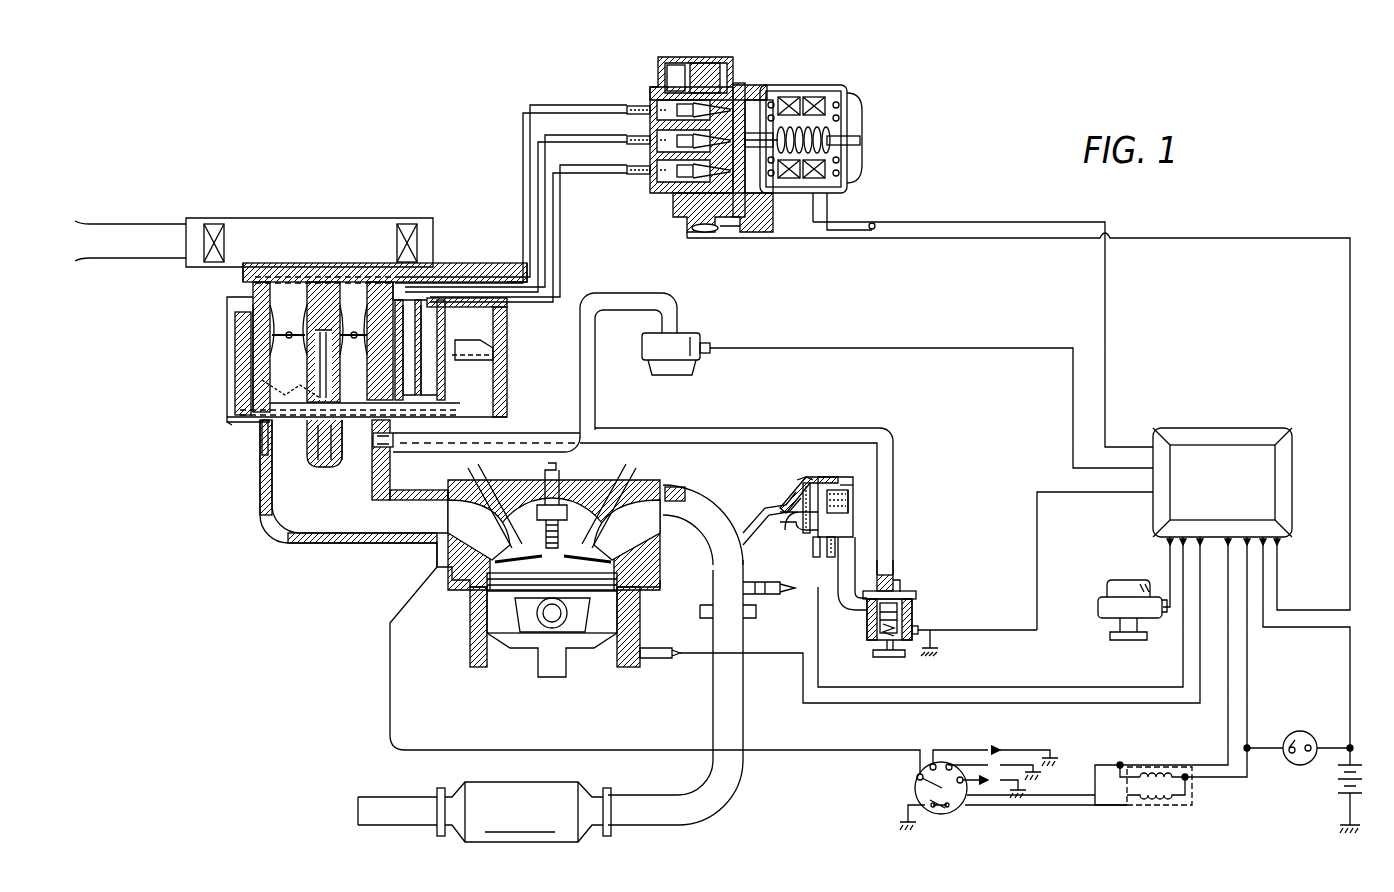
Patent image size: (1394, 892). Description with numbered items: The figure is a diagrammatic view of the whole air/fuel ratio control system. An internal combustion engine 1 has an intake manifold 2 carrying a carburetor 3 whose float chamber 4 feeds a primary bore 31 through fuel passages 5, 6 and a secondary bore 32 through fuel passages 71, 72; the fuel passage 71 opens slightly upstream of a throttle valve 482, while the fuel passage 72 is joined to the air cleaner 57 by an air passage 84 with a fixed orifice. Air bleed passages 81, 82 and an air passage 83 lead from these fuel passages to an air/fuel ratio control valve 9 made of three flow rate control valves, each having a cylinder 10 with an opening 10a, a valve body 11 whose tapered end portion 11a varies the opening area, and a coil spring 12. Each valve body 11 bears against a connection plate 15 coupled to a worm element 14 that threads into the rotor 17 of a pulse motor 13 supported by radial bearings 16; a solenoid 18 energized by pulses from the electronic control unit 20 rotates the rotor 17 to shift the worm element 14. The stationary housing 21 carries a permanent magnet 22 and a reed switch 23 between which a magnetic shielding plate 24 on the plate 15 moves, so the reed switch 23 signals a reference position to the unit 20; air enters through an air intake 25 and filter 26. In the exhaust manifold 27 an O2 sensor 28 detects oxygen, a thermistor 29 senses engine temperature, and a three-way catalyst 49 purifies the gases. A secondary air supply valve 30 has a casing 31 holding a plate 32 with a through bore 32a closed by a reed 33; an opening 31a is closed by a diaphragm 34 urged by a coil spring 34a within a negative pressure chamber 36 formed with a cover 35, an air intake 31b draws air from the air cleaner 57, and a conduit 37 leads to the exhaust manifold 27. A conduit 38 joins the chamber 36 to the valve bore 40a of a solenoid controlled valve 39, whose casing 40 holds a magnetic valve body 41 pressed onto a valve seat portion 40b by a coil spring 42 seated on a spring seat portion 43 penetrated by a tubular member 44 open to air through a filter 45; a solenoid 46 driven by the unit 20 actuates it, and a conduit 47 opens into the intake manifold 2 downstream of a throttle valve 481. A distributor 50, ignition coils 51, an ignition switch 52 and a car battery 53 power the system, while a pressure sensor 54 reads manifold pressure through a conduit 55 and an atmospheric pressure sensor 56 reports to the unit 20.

The internal combustion engine 1 is at (452, 628).
The intake manifold 2 is at (367, 540).
The carburetor 3 is at (453, 262).
The primary bore 31 is at (790, 495).
The secondary bore 32 is at (807, 477).
The float chamber 4 is at (493, 395).
The fuel passage 5 is at (430, 432).
The fuel passage 6 is at (410, 432).
The fuel passage 71 is at (232, 425).
The fuel passage 72 is at (302, 460).
The air bleed passage 81 is at (560, 200).
The air bleed passage 82 is at (545, 222).
The air passage 83 is at (530, 245).
The air passage 84 is at (303, 285).
The air/fuel ratio control valve 9 is at (733, 146).
The cylinder 10 is at (706, 98).
The opening 10a is at (717, 97).
The valve body 11 is at (678, 104).
The tapered end portion 11a is at (728, 108).
The coil spring 12 is at (638, 105).
The pulse motor 13 is at (834, 105).
The worm element 14 is at (862, 140).
The connection plate 15 is at (747, 97).
The radial bearings 16 is at (857, 100).
The rotor 17 is at (852, 125).
The solenoid 18 is at (832, 98).
The electronic control unit 20 is at (1208, 428).
The stationary housing 21 is at (700, 200).
The permanent magnet 22 is at (690, 233).
The reed switch 23 is at (712, 236).
The magnetic shielding plate 24 is at (745, 217).
The air intake 25 is at (702, 60).
The filter 26 is at (672, 57).
The exhaust manifold 27 is at (706, 502).
The O₂ sensor 28 is at (775, 580).
The thermistor 29 is at (660, 646).
The secondary air supply valve 30 is at (587, 515).
The opening 31a is at (797, 527).
The air intake 31b is at (817, 558).
The through bore 32a is at (835, 477).
The reed 33 is at (795, 479).
The diaphragm 34 is at (848, 503).
The coil spring 34a is at (855, 492).
The cover 35 is at (836, 543).
The negative pressure chamber 36 is at (850, 512).
The conduit 37 is at (748, 518).
The conduit 38 is at (856, 565).
The solenoid controlled valve 39 is at (917, 593).
The casing 40 is at (936, 606).
The valve bore 40a is at (912, 592).
The valve seat portion 40b is at (905, 580).
The valve body 41 is at (878, 598).
The coil spring 42 is at (870, 620).
The spring seat portion 43 is at (905, 640).
The tubular member 44 is at (882, 652).
The filter 45 is at (891, 658).
The solenoid 46 is at (925, 632).
The conduit 47 is at (895, 510).
The throttle valve 481 is at (328, 470).
The throttle valve 482 is at (270, 372).
The three-way catalyst 49 is at (545, 782).
The distributor 50 is at (915, 788).
The ignition coils 51 is at (1170, 767).
The ignition switch 52 is at (1302, 731).
The car battery 53 is at (1337, 780).
The pressure sensor 54 is at (700, 337).
The conduit 55 is at (622, 293).
The atmospheric pressure sensor 56 is at (1150, 625).
The air cleaner 57 is at (333, 217).